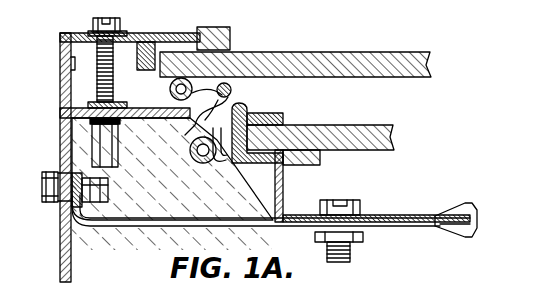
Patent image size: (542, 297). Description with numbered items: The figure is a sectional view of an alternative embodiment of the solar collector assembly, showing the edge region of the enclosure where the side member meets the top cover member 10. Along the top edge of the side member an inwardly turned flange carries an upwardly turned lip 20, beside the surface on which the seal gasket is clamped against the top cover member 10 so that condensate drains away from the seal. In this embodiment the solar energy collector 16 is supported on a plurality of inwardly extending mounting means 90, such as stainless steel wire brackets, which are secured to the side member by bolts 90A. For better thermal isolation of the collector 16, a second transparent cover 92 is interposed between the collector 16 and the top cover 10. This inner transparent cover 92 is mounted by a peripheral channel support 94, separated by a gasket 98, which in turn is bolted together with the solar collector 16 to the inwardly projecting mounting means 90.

The top cover member 10 is at (360, 53).
The solar energy collector 16 is at (463, 210).
The upwardly turned lip 20 is at (215, 103).
The inwardly extending mounting means 90 is at (180, 220).
The bolts 90A is at (117, 176).
The second transparent cover 92 is at (381, 126).
The peripheral channel support 94 is at (283, 184).
The gasket 98 is at (292, 118).